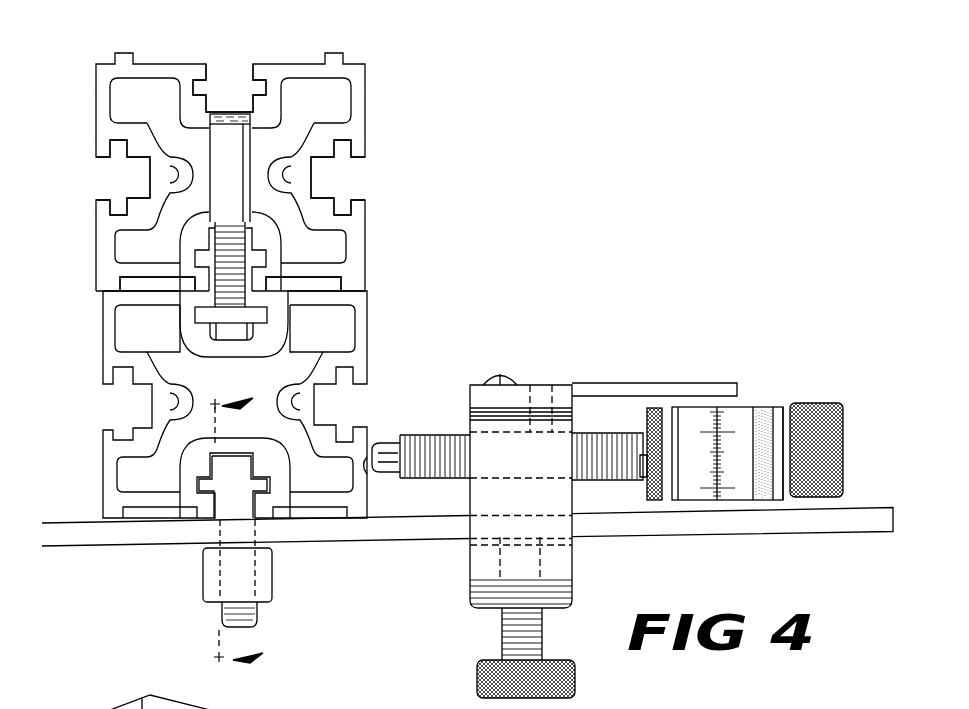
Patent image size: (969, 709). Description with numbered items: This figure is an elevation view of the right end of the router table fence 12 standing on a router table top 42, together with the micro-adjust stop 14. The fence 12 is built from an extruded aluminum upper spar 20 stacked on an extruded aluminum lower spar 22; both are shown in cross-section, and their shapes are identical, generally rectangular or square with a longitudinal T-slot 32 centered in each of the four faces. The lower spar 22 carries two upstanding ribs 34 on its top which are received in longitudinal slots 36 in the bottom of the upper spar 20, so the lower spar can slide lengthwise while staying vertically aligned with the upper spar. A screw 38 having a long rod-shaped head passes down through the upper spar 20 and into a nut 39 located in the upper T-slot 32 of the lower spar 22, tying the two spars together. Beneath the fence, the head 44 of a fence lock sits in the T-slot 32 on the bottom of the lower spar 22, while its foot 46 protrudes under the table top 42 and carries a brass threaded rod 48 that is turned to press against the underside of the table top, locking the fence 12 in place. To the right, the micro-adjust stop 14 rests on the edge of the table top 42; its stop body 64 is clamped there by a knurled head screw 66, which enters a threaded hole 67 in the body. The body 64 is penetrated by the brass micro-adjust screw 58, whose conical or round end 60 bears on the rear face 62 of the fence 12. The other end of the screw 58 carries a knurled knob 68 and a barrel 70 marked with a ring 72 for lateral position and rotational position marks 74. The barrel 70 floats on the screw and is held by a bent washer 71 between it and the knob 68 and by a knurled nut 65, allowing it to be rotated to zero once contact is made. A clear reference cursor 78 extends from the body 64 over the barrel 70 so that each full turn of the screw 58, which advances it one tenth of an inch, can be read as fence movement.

The fence 12 is at (372, 283).
The micro-adjust stop 14 is at (560, 378).
The upper spar 20 is at (368, 100).
The lower spar 22 is at (372, 330).
The T-slot 32 is at (232, 86).
The upstanding ribs 34 is at (122, 283).
The longitudinal slots 36 is at (168, 292).
The screw 38 is at (256, 152).
The nut 39 is at (212, 403).
The router table top 42 is at (830, 531).
The head 44 is at (245, 505).
The foot 46 is at (208, 586).
The threaded rod 48 is at (258, 615).
The micro-adjust stop screw 58 is at (447, 437).
The end 60 is at (372, 471).
The rear face 62 is at (370, 433).
The stop body 64 is at (565, 561).
The knurled nut 65 is at (655, 501).
The knurled head screw 66 is at (480, 665).
The threaded hole 67 is at (470, 543).
The knurled knob 68 is at (820, 403).
The barrel 70 is at (757, 407).
The bent washer 71 is at (787, 420).
The ring 72 is at (707, 427).
The rotational position marks 74 is at (713, 500).
The reference cursor 78 is at (640, 382).